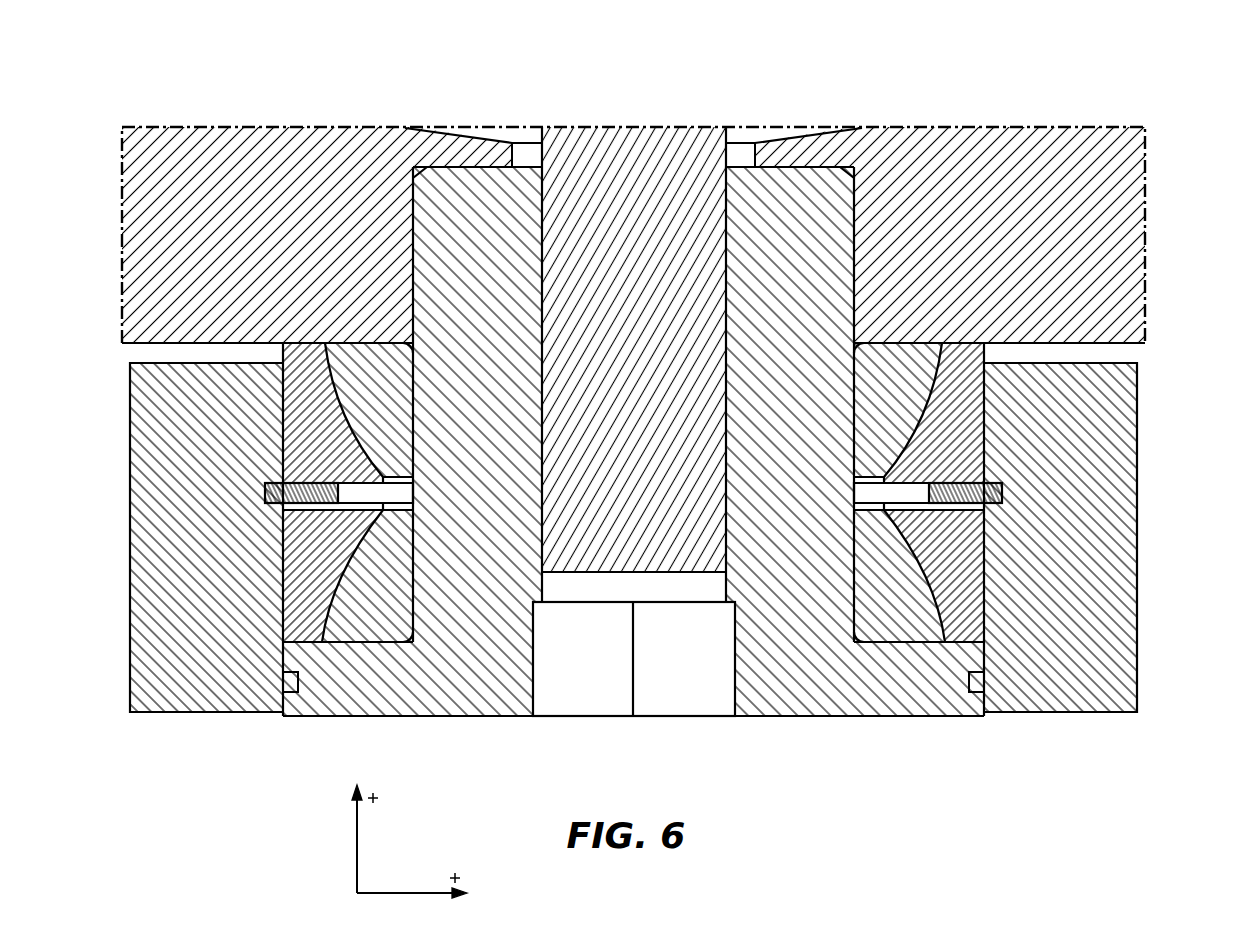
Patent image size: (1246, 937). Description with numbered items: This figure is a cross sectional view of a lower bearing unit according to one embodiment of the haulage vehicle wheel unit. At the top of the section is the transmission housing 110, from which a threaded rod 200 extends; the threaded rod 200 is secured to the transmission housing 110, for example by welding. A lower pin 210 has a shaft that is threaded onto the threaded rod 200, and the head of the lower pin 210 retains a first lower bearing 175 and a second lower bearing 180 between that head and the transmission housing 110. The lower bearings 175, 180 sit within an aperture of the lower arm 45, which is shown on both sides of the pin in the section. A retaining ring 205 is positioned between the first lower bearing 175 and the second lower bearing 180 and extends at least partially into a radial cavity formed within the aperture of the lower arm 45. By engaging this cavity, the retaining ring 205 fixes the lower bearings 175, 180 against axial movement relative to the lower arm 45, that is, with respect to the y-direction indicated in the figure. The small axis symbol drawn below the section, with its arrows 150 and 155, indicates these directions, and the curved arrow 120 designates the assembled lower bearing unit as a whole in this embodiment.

The transmission housing 110 is at (980, 192).
The threaded rod 200 is at (642, 175).
The lower pin 210 is at (800, 690).
The lower arm 45 is at (177, 442).
The first lower bearing 175 is at (380, 418).
The retaining ring 205 is at (265, 493).
The second lower bearing 180 is at (370, 627).
The coordinate reference 120 is at (882, 772).
The second axis 155 is at (360, 832).
The first axis 150 is at (410, 892).